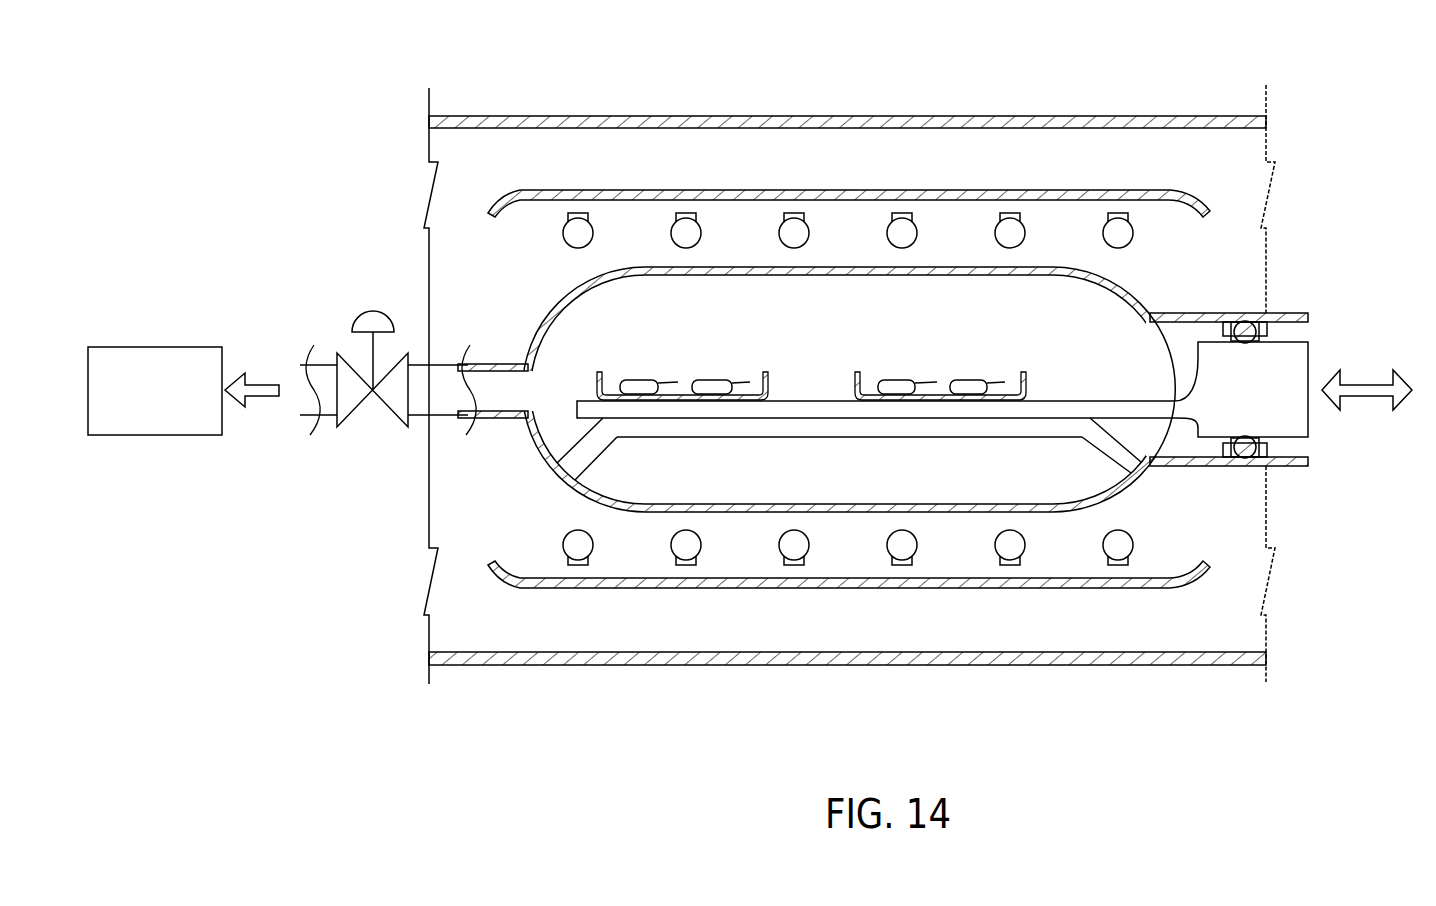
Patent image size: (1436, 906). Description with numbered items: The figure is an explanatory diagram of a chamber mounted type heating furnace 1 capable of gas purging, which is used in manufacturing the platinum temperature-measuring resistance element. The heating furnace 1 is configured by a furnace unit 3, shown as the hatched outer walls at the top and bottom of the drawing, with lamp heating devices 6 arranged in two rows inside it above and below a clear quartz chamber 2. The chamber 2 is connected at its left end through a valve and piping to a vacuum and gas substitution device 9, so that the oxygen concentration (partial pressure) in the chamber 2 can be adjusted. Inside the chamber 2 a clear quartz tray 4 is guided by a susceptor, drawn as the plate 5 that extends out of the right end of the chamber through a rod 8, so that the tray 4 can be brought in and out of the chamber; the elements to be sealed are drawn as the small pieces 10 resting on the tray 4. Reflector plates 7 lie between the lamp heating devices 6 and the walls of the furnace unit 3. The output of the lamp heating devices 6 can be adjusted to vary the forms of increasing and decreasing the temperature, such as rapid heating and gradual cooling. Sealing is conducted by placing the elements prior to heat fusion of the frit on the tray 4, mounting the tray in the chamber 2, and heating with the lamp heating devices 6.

The chamber mounted type heating furnace 1 is at (926, 92).
The clear quartz chamber 2 is at (1137, 288).
The furnace unit 3 is at (1098, 117).
The clear quartz tray 4 is at (597, 372).
The stage plate 5 is at (963, 428).
The lamp heating devices 6 is at (577, 233).
The reflector plate 7 is at (1167, 192).
The drive rod 8 is at (1248, 343).
The vacuum and gas substitution device 9 is at (150, 347).
The workpiece 10 is at (716, 382).